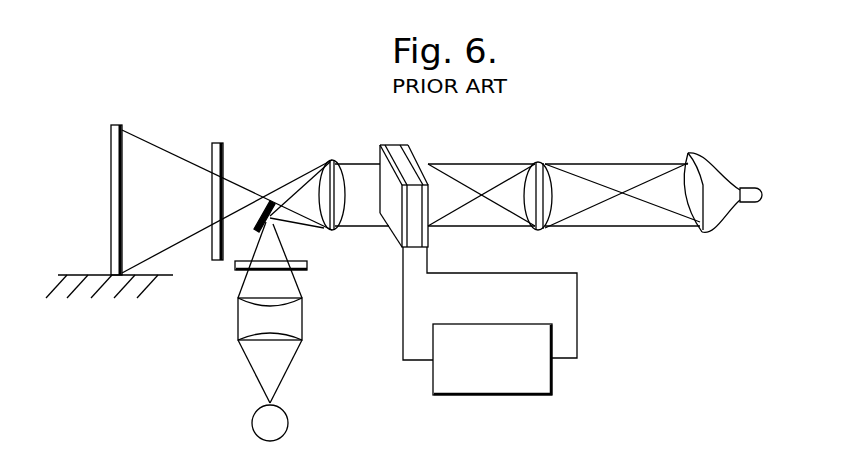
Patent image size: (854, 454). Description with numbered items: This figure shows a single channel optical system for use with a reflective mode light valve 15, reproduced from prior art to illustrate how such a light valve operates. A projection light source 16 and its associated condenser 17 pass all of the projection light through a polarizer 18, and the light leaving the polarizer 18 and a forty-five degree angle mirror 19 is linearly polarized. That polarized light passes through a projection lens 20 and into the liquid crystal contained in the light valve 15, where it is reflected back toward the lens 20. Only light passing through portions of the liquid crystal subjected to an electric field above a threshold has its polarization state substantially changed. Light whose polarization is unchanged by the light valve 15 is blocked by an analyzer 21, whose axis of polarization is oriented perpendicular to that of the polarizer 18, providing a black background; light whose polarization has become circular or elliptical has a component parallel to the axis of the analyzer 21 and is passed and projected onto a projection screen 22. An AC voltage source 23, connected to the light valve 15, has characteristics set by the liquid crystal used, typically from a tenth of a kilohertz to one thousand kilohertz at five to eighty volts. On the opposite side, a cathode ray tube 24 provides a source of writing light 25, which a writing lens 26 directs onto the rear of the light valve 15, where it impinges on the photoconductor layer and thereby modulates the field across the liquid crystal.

The light valve 15 is at (424, 152).
The projection light source 16 is at (283, 423).
The condenser 17 is at (245, 318).
The polarizer 18 is at (303, 268).
The 45° angle mirror 19 is at (297, 226).
The projection lens 20 is at (332, 160).
The analyzer 21 is at (217, 150).
The projection screen 22 is at (115, 141).
The AC voltage source 23 is at (549, 390).
The cathode ray tube 24 is at (717, 177).
The writing light 25 is at (667, 210).
The writing lens 26 is at (542, 163).